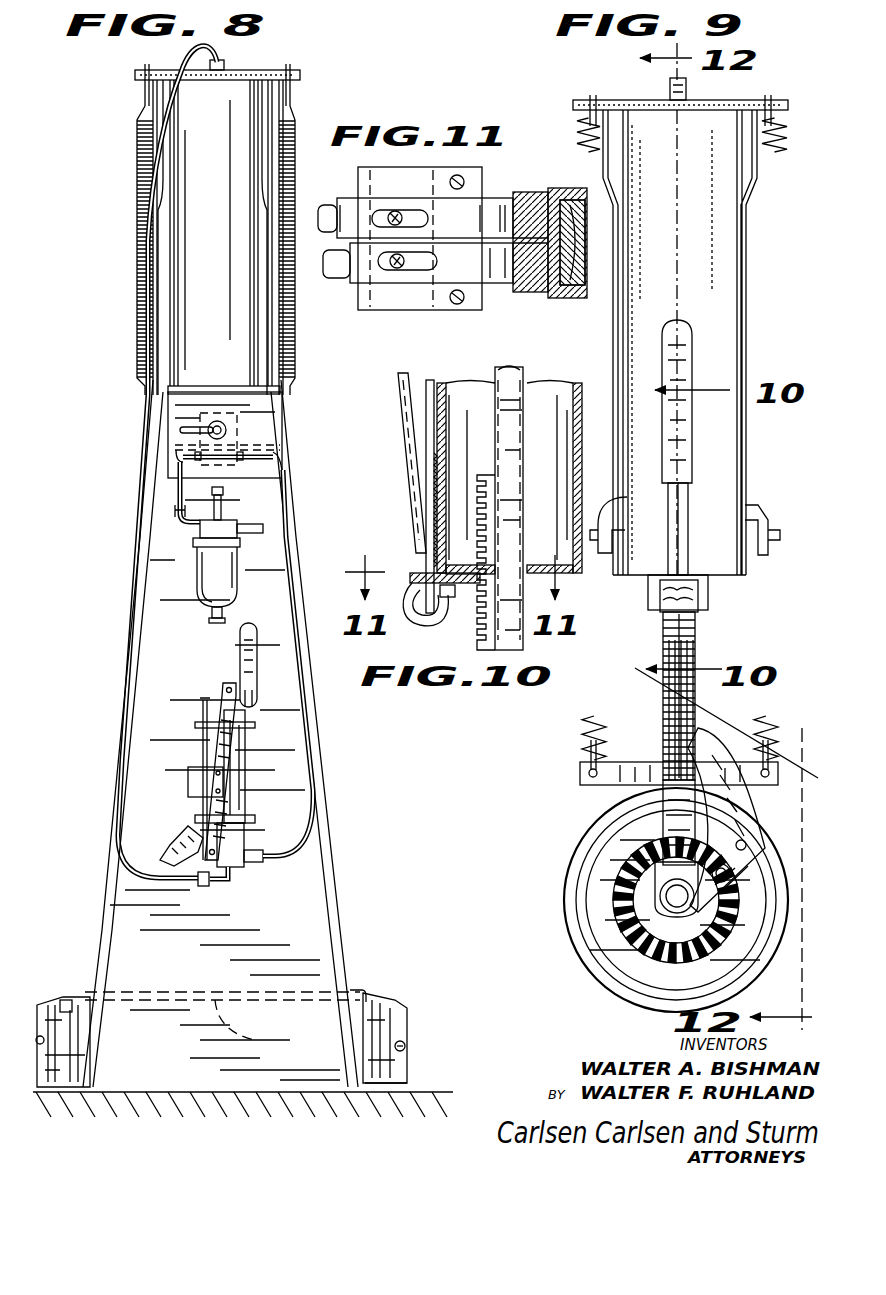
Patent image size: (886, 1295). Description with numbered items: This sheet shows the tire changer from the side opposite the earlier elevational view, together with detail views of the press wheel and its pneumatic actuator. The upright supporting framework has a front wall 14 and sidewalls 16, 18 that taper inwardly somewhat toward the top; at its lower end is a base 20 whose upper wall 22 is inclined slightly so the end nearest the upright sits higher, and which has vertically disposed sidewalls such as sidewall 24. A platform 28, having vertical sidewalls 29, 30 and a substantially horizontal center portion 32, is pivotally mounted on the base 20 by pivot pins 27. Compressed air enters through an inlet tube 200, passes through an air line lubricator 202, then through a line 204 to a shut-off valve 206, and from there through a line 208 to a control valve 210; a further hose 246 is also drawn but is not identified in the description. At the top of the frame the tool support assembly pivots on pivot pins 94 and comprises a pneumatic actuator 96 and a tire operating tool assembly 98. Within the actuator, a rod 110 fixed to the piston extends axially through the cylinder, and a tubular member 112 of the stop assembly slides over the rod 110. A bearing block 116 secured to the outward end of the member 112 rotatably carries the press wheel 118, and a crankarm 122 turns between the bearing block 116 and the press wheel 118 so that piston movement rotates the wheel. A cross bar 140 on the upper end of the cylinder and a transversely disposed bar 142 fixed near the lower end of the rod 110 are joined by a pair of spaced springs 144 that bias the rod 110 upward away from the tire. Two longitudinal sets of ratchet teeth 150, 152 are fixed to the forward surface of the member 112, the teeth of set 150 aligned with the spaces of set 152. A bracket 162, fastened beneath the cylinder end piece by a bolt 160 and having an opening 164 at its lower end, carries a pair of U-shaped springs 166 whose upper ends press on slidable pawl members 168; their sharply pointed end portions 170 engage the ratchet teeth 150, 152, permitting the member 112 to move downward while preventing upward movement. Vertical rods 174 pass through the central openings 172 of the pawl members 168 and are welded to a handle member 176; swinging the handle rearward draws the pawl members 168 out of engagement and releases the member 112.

In FIG. 8, the front wall 14 is at (292, 907).
In FIG. 8, the sidewall 16 is at (105, 868).
In FIG. 8, the sidewall 18 is at (345, 915).
In FIG. 8, the base 20 is at (368, 995).
In FIG. 8, the upper wall 22 is at (244, 1029).
In FIG. 8, the sidewall 24 is at (80, 1000).
In FIG. 8, the pivot pins 27 is at (45, 1040).
In FIG. 8, the platform 28 is at (392, 1012).
In FIG. 8, the vertical sidewall 29 is at (50, 1057).
In FIG. 8, the vertical sidewall 30 is at (395, 1067).
In FIG. 8, the center portion 32 is at (360, 990).
In FIG. 9, the pivot pins 94 is at (766, 526).
In FIG. 9, the pneumatic actuator 96 is at (738, 298).
In FIG. 9, the tire operating tool assembly 98 is at (560, 858).
In FIG. 11, the rod 110 is at (560, 190).
In FIG. 11, the tubular member 112 is at (572, 300).
In FIG. 9, the tubular member 112 is at (670, 830).
In FIG. 9, the bearing block 116 is at (655, 870).
In FIG. 9, the press wheel 118 is at (603, 978).
In FIG. 9, the crankarm 122 is at (748, 850).
In FIG. 9, the cross bar 140 is at (672, 100).
In FIG. 9, the transversely disposed bar 142 is at (612, 775).
In FIG. 9, the springs 144 is at (778, 726).
In FIG. 11, the set of ratchet teeth 150 is at (530, 200).
In FIG. 9, the set of ratchet teeth 150 is at (662, 698).
In FIG. 11, the set of ratchet teeth 152 is at (525, 292).
In FIG. 9, the set of ratchet teeth 152 is at (696, 700).
In FIG. 11, the bolt 160 is at (458, 304).
In FIG. 10, the bracket 162 is at (450, 598).
In FIG. 10, the opening 164 is at (420, 612).
In FIG. 11, the U-shaped springs 166 is at (330, 235).
In FIG. 11, the pawl members 168 is at (470, 231).
In FIG. 11, the end portion 170 is at (533, 245).
In FIG. 11, the central opening 172 is at (412, 268).
In FIG. 11, the rods 174 is at (392, 266).
In FIG. 10, the rods 174 is at (426, 525).
In FIG. 9, the rods 174 is at (690, 560).
In FIG. 10, the handle member 176 is at (420, 437).
In FIG. 9, the handle member 176 is at (690, 456).
In FIG. 8, the inlet tube 200 is at (258, 528).
In FIG. 8, the air line lubricator 202 is at (233, 568).
In FIG. 8, the line 204 is at (178, 497).
In FIG. 8, the shut-off valve 206 is at (226, 431).
In FIG. 8, the line 208 is at (316, 838).
In FIG. 8, the control valve 210 is at (205, 690).
In FIG. 8, the air hose 246 is at (128, 698).